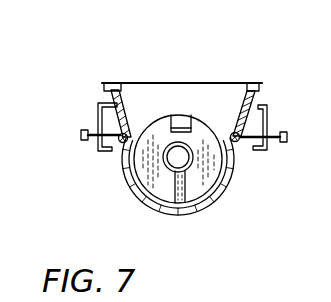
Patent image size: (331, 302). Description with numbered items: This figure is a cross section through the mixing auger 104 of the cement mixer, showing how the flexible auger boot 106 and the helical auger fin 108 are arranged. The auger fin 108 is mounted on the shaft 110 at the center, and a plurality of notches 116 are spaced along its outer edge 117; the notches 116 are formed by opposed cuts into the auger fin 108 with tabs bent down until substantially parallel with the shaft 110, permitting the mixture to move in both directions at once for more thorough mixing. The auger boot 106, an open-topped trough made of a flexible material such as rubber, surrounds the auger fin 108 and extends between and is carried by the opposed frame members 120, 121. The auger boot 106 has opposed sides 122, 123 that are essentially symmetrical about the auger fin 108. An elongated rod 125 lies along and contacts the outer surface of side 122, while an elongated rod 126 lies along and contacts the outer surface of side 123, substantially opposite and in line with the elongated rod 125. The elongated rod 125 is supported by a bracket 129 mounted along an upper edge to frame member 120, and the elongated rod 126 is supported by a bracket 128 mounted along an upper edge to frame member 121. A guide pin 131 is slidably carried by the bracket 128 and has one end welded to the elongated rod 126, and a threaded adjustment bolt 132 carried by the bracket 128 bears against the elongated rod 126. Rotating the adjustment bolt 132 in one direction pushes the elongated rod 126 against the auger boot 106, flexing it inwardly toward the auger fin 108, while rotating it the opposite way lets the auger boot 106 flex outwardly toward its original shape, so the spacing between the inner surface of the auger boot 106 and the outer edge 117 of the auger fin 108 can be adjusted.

The mixing auger 104 is at (167, 67).
The auger boot 106 is at (187, 214).
The auger fin 108 is at (209, 122).
The shaft 110 is at (165, 170).
The notches 116 is at (185, 115).
The outer edge 117 is at (213, 191).
The frame member 120 is at (104, 84).
The frame member 121 is at (262, 84).
The side 122 is at (132, 190).
The side 123 is at (232, 181).
The elongated rod 125 is at (121, 160).
The elongated rod 126 is at (240, 144).
The bracket 128 is at (268, 115).
The bracket 129 is at (99, 112).
The guide pin 131 is at (287, 136).
The adjustment bolt 132 is at (81, 135).